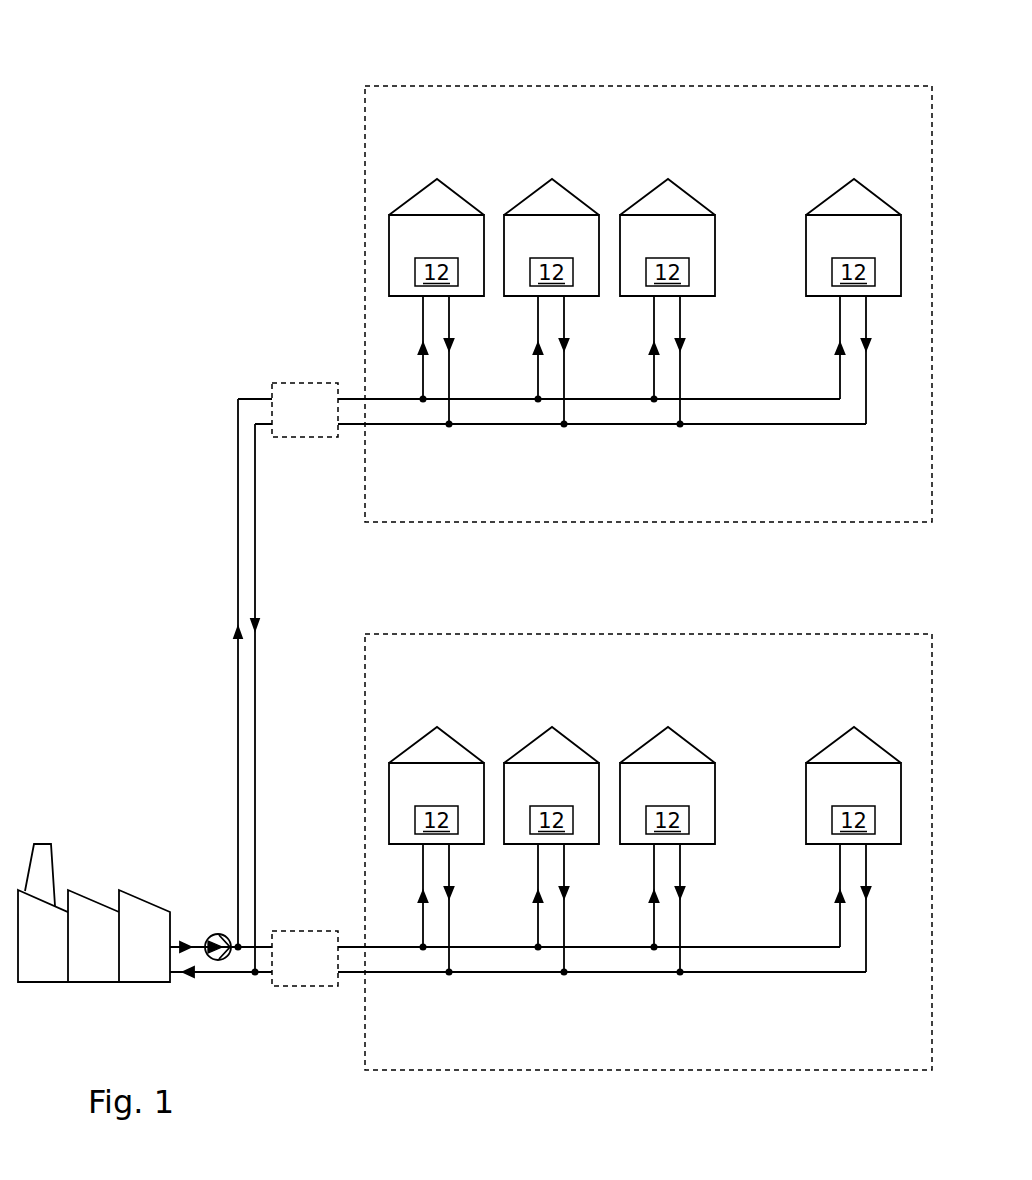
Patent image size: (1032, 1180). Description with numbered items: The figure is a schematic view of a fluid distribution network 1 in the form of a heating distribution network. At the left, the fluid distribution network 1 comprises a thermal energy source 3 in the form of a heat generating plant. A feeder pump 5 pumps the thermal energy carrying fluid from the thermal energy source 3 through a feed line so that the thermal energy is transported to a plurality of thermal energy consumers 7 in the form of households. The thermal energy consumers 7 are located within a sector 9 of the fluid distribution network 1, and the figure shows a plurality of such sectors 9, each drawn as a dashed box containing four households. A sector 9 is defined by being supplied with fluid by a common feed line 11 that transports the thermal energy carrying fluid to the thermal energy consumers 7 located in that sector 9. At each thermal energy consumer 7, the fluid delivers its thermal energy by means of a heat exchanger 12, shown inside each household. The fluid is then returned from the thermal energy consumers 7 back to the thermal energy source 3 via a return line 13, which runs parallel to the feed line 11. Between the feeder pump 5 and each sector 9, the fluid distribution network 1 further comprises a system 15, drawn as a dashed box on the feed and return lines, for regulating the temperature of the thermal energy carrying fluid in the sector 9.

The fluid distribution network 1 is at (157, 61).
The thermal energy source 3 is at (143, 890).
The feeder pump 5 is at (220, 930).
The thermal energy consumers 7 is at (645, 485).
The sector 9 is at (421, 83).
The feed line 11 is at (407, 395).
The heat exchanger 12 is at (645, 546).
The return line 13 is at (408, 432).
The system for regulating the temperature 15 is at (306, 382).